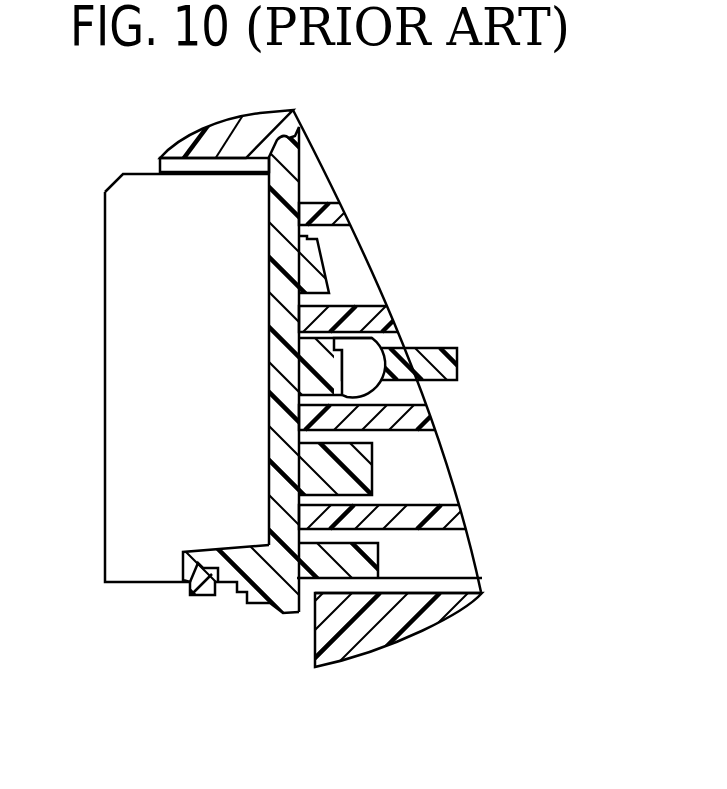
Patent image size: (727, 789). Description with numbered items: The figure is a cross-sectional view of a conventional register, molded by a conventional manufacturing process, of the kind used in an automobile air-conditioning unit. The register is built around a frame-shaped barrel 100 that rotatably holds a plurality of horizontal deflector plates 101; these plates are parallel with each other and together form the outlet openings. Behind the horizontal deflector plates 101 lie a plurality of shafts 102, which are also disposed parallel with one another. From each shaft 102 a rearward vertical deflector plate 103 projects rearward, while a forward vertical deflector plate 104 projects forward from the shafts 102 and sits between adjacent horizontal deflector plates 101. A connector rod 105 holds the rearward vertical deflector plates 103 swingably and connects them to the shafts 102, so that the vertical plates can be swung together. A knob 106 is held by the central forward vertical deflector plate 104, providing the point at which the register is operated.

The frame-shaped barrel 100 is at (258, 112).
The horizontal deflector plates 101 is at (324, 204).
The shafts 102 is at (270, 294).
The rearward vertical deflector plates 103 is at (121, 448).
The forward vertical deflector plates 104 is at (330, 257).
The connector rod 105 is at (193, 598).
The knob 106 is at (460, 363).